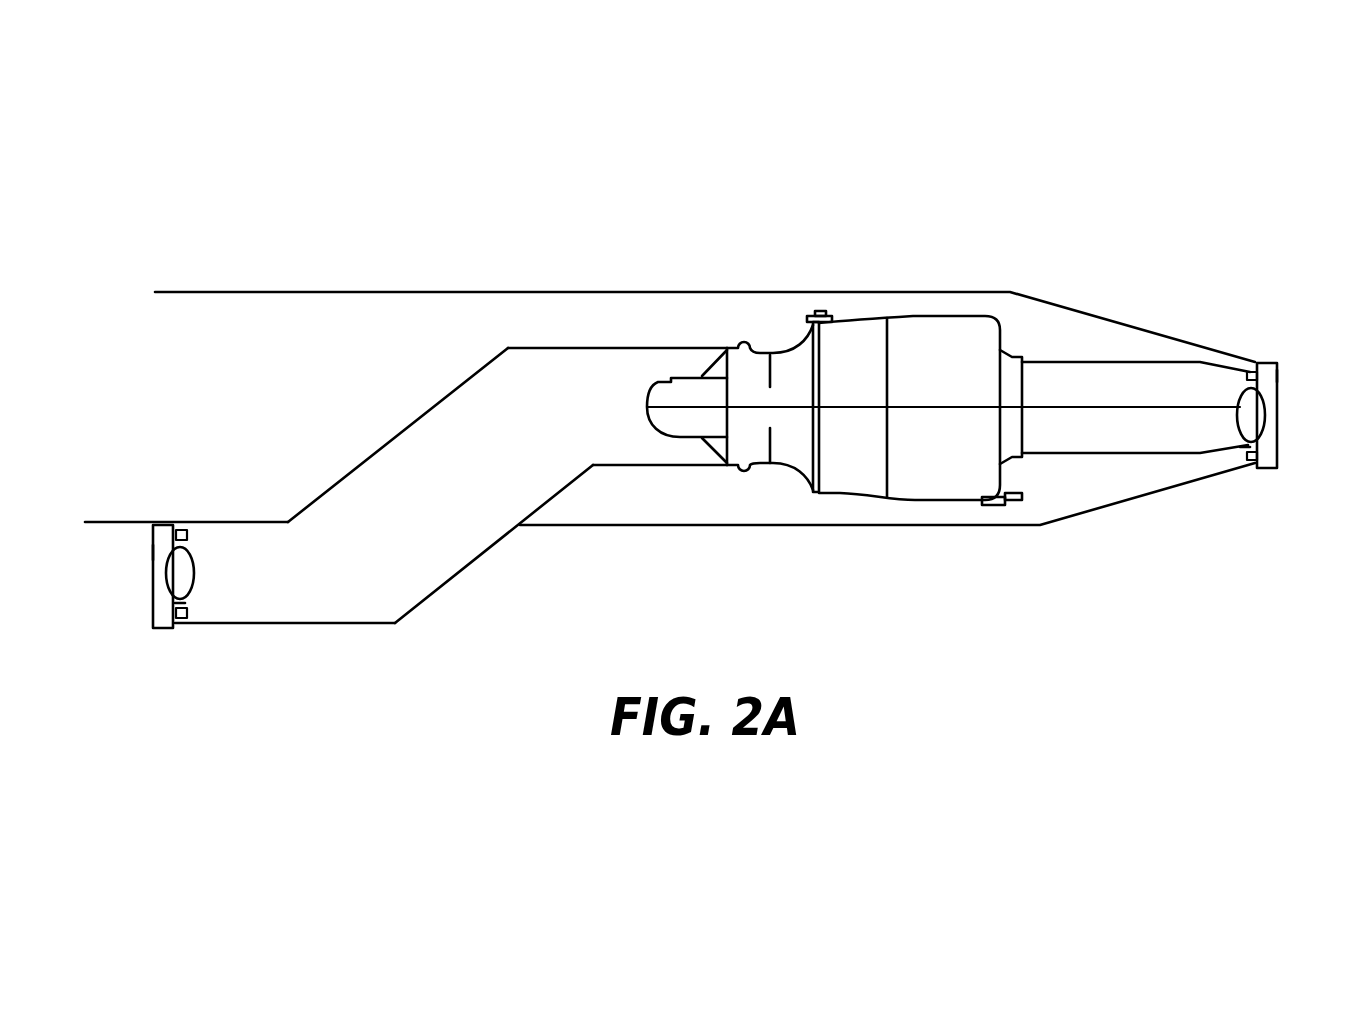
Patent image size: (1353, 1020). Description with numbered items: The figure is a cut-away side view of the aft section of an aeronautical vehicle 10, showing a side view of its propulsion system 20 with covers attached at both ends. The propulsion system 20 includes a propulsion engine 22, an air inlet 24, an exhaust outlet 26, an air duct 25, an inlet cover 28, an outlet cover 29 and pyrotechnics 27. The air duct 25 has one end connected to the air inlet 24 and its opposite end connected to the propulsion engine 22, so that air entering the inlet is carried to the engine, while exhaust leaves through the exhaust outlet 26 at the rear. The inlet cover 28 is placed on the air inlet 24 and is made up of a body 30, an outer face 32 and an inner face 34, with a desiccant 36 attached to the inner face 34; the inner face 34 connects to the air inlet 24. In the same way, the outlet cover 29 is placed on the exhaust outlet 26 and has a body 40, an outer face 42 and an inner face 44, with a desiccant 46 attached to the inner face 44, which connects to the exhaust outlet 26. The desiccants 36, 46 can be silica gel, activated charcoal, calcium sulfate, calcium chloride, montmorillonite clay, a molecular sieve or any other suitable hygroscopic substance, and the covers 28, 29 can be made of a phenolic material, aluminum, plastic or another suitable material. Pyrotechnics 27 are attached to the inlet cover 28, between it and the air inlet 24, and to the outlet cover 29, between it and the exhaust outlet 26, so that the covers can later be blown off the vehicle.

The aeronautical vehicle 10 is at (708, 180).
The propulsion system 20 is at (773, 490).
The propulsion engine 22 is at (960, 335).
The air inlet 24 is at (255, 555).
The air duct 25 is at (490, 427).
The exhaust outlet 26 is at (1207, 382).
The pyrotechnics 27 is at (180, 530).
The inlet cover 28 is at (140, 503).
The outlet cover 29 is at (1285, 345).
The body 30 is at (162, 612).
The outer face 32 is at (155, 552).
The inner face 34 is at (185, 603).
The desiccant 36 is at (185, 580).
The body 40 is at (1267, 467).
The outer face 42 is at (1277, 376).
The inner face 44 is at (1247, 446).
The desiccant 46 is at (1240, 417).